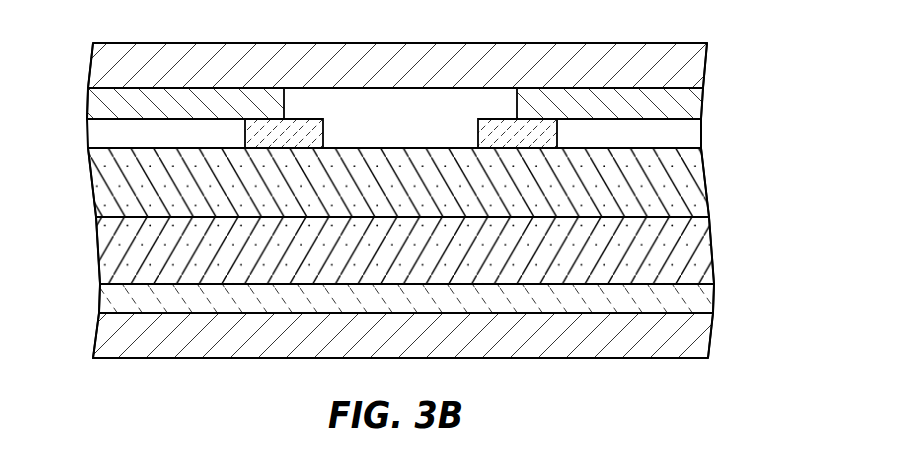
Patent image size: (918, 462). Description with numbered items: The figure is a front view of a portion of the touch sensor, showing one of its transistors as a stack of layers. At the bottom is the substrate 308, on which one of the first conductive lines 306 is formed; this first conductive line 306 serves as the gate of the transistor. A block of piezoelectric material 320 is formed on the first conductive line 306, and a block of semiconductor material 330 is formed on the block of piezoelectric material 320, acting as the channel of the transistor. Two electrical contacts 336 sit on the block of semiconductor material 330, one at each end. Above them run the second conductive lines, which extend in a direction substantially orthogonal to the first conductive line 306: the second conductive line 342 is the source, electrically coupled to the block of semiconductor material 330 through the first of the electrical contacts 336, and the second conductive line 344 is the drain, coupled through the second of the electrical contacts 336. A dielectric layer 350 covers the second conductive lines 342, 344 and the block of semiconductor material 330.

The dielectric layer 350 is at (690, 71).
The second conductive line 342 is at (100, 106).
The second conductive line 344 is at (690, 110).
The electrical contacts 336 is at (310, 135).
The block of semiconductor material 330 is at (693, 191).
The block of piezoelectric material 320 is at (700, 258).
The first conductive line 306 is at (112, 303).
The substrate 308 is at (697, 341).